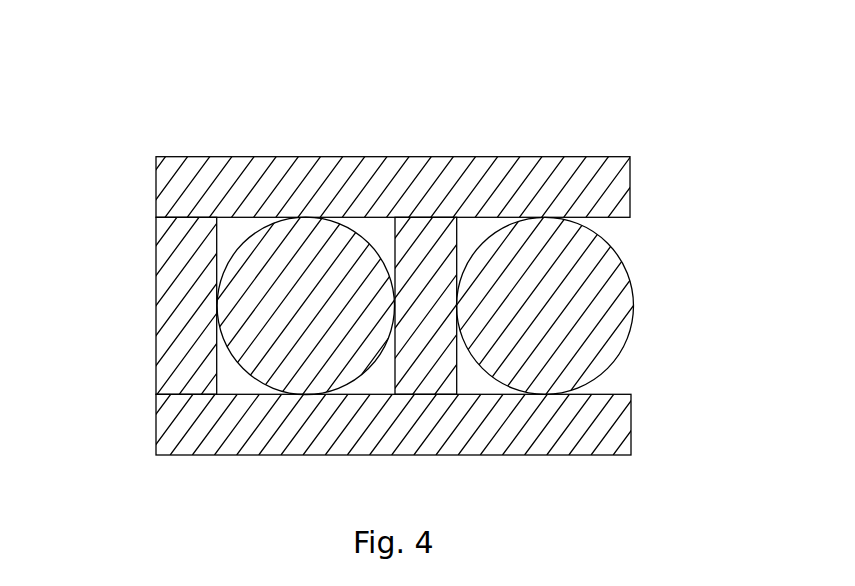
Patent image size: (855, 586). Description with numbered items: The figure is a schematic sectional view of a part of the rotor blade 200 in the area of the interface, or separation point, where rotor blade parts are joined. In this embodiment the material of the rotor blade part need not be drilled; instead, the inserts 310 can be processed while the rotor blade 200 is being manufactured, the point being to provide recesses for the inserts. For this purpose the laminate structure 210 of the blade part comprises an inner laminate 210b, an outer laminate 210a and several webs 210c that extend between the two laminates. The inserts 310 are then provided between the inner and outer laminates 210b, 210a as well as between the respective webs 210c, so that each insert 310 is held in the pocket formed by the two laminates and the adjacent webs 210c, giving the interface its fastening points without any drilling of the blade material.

The rotor blade 200 is at (412, 242).
The support structure 210 is at (412, 246).
The outer laminate 210a is at (631, 192).
The inner laminate 210b is at (631, 417).
The webs 210c is at (180, 348).
The insert 310 is at (633, 284).